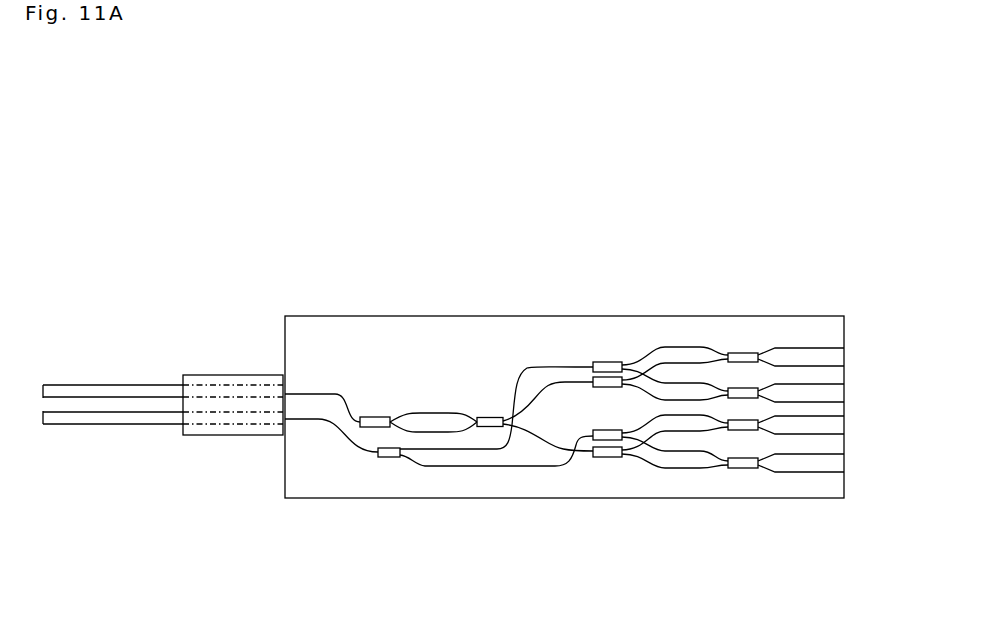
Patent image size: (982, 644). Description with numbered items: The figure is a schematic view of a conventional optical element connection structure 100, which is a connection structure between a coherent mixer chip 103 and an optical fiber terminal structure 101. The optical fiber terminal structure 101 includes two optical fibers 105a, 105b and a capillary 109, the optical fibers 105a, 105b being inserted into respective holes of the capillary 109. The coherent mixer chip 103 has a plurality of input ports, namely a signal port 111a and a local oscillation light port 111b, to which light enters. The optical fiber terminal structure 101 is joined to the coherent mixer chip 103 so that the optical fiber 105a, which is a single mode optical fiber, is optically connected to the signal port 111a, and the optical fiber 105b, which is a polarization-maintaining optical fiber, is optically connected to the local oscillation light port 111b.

The optical element connection structure 100 is at (587, 178).
The optical fiber terminal structure 101 is at (133, 182).
The coherent mixer chip 103 is at (553, 316).
The optical fiber 105a is at (90, 392).
The optical fiber 105b is at (88, 417).
The capillary 109 is at (233, 373).
The signal port 111a is at (287, 397).
The local oscillation light port 111b is at (287, 420).